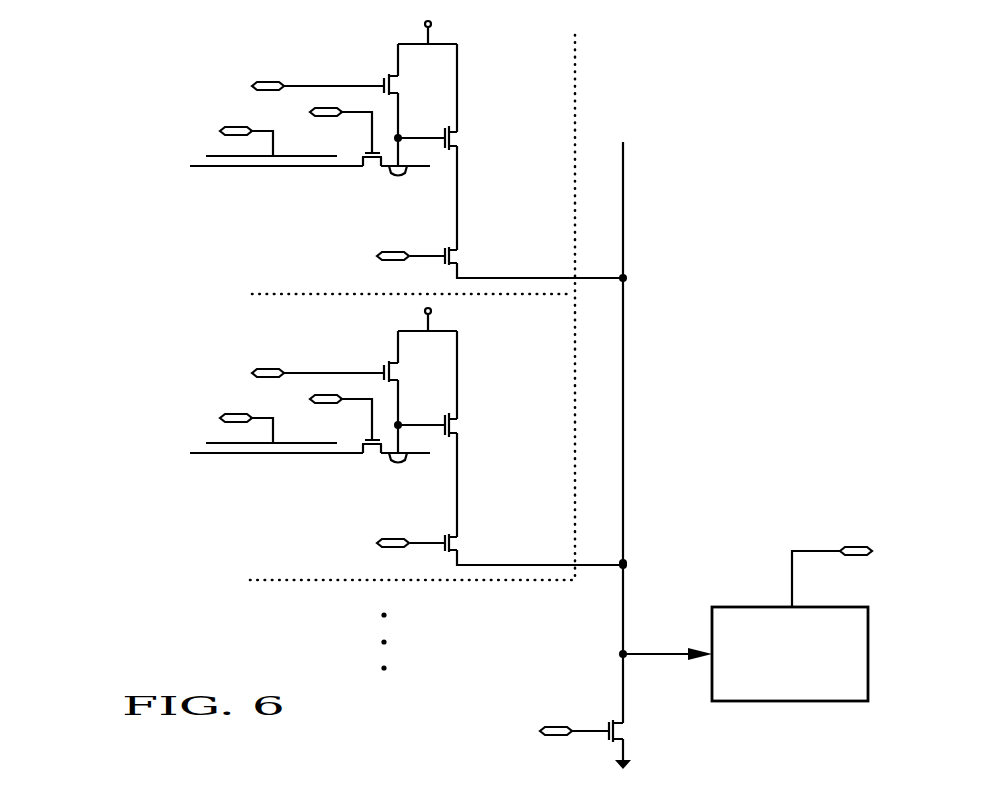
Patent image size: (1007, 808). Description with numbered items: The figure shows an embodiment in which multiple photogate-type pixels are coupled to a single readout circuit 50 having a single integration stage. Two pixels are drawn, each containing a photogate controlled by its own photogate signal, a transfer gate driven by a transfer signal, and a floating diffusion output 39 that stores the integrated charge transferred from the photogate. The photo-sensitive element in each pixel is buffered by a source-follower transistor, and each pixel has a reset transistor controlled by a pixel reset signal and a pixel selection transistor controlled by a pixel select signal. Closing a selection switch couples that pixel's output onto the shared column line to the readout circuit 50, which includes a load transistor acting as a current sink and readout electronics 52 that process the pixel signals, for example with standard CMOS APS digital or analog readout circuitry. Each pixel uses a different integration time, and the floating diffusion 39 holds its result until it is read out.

The floating diffusion output 39 is at (375, 183).
The readout circuit 50 is at (666, 608).
The readout electronics 52 is at (758, 702).